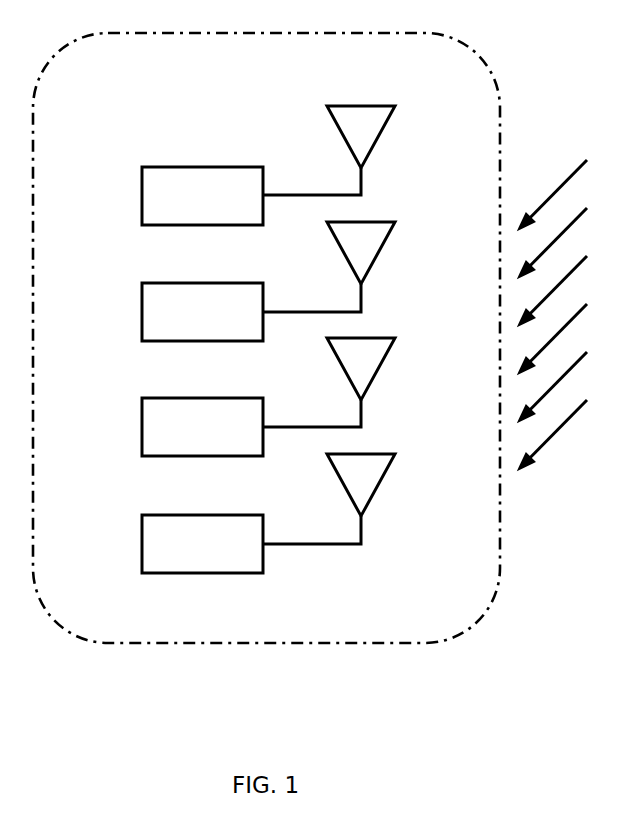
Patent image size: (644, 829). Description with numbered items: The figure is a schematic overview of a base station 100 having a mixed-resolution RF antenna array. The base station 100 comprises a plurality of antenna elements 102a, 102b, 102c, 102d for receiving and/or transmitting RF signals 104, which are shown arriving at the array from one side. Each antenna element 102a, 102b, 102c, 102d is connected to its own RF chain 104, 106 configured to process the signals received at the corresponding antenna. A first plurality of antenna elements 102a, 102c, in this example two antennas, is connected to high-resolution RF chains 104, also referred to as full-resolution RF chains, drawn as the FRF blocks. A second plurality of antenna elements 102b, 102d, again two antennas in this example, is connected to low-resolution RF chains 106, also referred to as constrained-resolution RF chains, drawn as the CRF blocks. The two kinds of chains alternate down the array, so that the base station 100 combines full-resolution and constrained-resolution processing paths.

The base station 100 is at (173, 645).
The antenna element 102a is at (379, 139).
The antenna element 102b is at (379, 255).
The antenna element 102c is at (379, 371).
The antenna element 102d is at (379, 487).
The high-resolution RF chain 104 is at (142, 196).
The low-resolution RF chain 106 is at (142, 311).